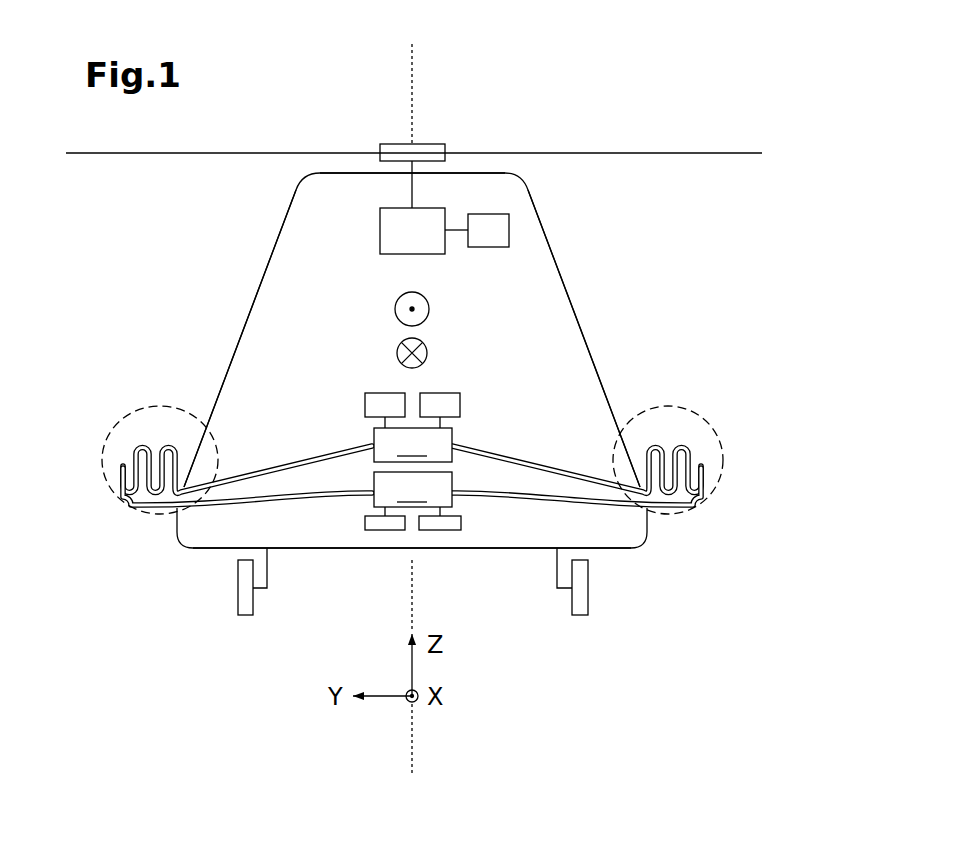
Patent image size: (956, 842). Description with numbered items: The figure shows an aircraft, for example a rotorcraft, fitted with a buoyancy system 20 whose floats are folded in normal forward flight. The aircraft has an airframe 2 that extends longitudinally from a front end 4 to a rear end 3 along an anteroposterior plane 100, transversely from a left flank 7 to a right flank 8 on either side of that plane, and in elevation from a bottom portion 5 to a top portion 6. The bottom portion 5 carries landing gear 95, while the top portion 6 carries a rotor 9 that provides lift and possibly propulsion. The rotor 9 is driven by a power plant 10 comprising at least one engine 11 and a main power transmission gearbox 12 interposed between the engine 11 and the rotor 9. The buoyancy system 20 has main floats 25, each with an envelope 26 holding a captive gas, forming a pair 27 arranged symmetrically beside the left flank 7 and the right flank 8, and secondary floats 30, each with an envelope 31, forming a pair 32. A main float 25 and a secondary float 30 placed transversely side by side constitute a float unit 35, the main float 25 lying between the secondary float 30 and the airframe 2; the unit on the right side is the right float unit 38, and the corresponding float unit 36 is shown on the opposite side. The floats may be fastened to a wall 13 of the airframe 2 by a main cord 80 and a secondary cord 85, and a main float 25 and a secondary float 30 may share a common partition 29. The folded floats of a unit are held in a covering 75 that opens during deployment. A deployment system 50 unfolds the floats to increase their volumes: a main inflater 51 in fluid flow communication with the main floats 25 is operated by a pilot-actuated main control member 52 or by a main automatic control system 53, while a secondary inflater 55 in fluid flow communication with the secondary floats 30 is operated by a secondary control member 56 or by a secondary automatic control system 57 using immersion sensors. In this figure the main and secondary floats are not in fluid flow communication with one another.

The anteroposterior plane 100 is at (413, 70).
The rotor 9 is at (461, 121).
The top portion 6 is at (482, 173).
The main power transmission gearbox 12 is at (380, 227).
The engine 11 is at (509, 230).
The airframe 2 is at (562, 270).
The right flank 8 is at (248, 322).
The power plant 10 is at (355, 247).
The front end 4 is at (412, 309).
The rear end 3 is at (427, 355).
The left flank 7 is at (582, 323).
The wall 13 is at (594, 360).
The main control member 52 is at (365, 405).
The main automatic control system 53 is at (460, 405).
The main cord 80 is at (646, 452).
The envelope of main float 26 is at (653, 446).
The main float 25 is at (440, 415).
The pair of main floats 27 is at (170, 420).
The secondary float 30 is at (145, 442).
The envelope of secondary float 31 is at (731, 445).
The pair of secondary floats 32 is at (700, 436).
The main inflater 51 is at (413, 445).
The deployment system 50 is at (463, 436).
The partition 29 is at (705, 455).
The covering 75 is at (104, 466).
The secondary inflater 55 is at (413, 494).
The float unit 35 is at (143, 520).
The right float unit 38 is at (247, 486).
The right connecting arm 36 is at (576, 535).
The secondary control member 56 is at (365, 523).
The secondary automatic control system 57 is at (461, 523).
The bottom portion 5 is at (508, 549).
The secondary cord 85 is at (667, 504).
The buoyancy system 20 is at (748, 525).
The landing gear 95 is at (240, 600).